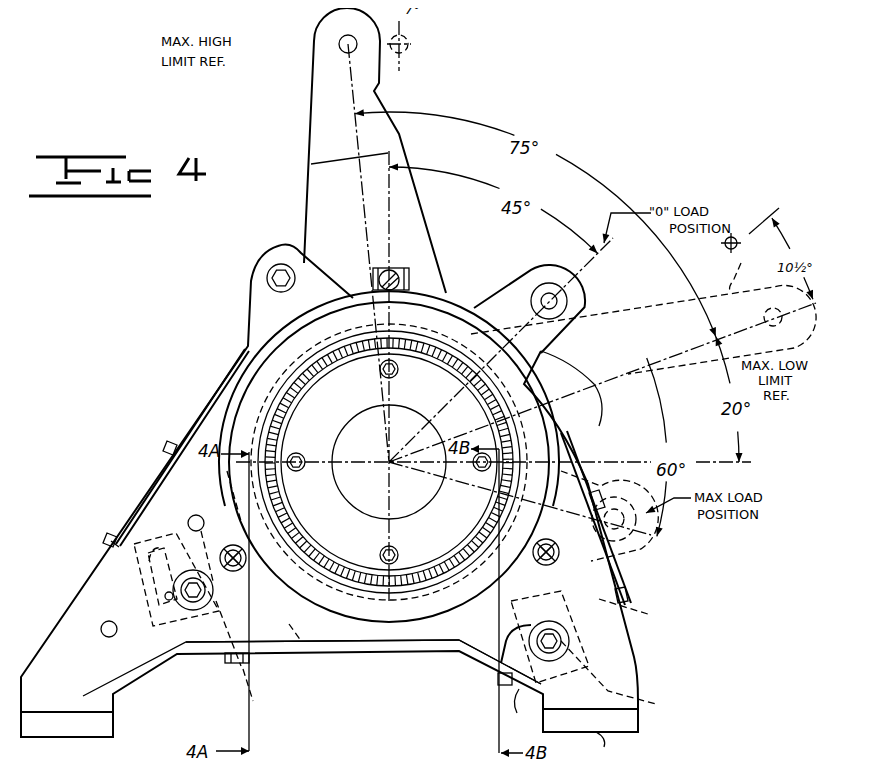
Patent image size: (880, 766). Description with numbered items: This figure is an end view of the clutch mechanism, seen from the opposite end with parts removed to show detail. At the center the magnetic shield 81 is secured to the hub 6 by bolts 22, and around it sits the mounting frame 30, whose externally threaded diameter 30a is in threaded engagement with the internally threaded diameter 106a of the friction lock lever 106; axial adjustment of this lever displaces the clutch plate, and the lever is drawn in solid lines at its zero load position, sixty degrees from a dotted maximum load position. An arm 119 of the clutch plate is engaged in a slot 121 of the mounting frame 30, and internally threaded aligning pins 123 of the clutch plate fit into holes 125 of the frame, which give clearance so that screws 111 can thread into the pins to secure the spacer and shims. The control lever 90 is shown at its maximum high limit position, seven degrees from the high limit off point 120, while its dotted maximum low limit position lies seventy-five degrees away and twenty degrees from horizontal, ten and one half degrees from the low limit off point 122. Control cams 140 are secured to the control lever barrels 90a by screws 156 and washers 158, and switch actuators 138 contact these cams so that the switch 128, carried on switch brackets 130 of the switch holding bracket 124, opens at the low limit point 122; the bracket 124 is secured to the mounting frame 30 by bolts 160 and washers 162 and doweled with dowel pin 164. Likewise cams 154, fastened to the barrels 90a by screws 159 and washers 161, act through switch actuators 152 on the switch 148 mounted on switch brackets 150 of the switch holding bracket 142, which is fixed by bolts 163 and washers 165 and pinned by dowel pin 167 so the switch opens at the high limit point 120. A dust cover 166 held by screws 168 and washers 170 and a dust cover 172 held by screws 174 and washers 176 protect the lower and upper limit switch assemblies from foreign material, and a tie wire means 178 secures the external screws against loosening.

The hub 6 is at (505, 450).
The bolts 22 is at (482, 471).
The mounting frame 30 is at (250, 267).
The externally threaded diameter 30a is at (496, 430).
The magnetic shield 81 is at (349, 506).
The control lever 90 is at (415, 207).
The control lever barrel 90a is at (470, 538).
The friction lock lever 106 is at (555, 303).
The internally threaded diameter 106a is at (566, 393).
The screws 111 is at (390, 285).
The arm 119 is at (394, 267).
The high limit "off" point 120 is at (412, 40).
The slot 121 is at (408, 275).
The low limit "off" point 122 is at (737, 237).
The internally threaded aligning pins 123 is at (372, 541).
The switch holding bracket 124 is at (205, 650).
The holes 125 is at (573, 555).
The switch 128 is at (125, 516).
The switch brackets 130 is at (128, 550).
The switch actuators 138 is at (200, 496).
The control cams 140 is at (283, 497).
The switch holding bracket 142 is at (614, 745).
The switch 148 is at (605, 575).
The switch brackets 150 is at (643, 612).
The switch actuators 152 is at (632, 538).
The control cams 154 is at (452, 618).
The screws 156 is at (261, 685).
The washers 158 is at (288, 633).
The screws 159 is at (480, 660).
The bolts 160 is at (195, 612).
The washers 161 is at (545, 637).
The washers 162 is at (216, 696).
The bolts 163 is at (509, 712).
The dowel pin 164 is at (170, 598).
The washers 165 is at (570, 641).
The dust cover 166 is at (100, 563).
The dowel pin 167 is at (500, 676).
The screws 168 is at (108, 533).
The washers 170 is at (112, 541).
The dust cover 172 is at (627, 682).
The screws 174 is at (630, 592).
The washers 176 is at (628, 606).
The tie wire means 178 is at (152, 472).